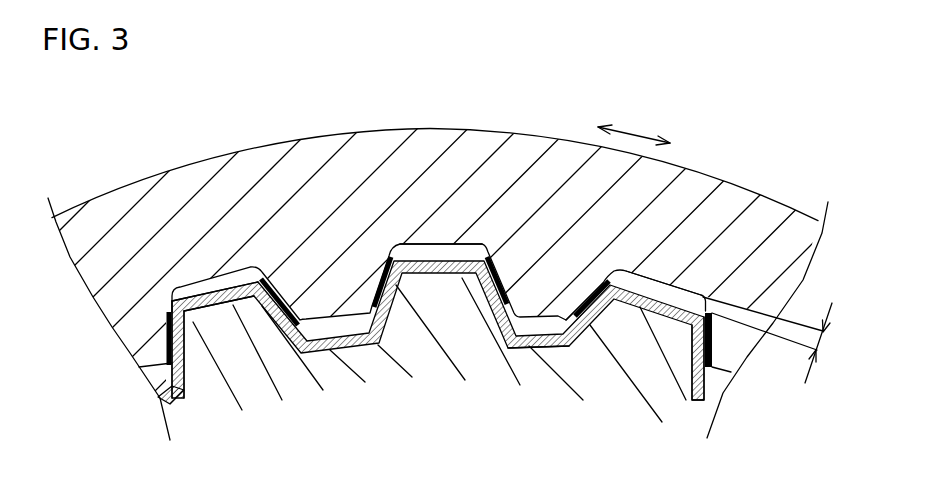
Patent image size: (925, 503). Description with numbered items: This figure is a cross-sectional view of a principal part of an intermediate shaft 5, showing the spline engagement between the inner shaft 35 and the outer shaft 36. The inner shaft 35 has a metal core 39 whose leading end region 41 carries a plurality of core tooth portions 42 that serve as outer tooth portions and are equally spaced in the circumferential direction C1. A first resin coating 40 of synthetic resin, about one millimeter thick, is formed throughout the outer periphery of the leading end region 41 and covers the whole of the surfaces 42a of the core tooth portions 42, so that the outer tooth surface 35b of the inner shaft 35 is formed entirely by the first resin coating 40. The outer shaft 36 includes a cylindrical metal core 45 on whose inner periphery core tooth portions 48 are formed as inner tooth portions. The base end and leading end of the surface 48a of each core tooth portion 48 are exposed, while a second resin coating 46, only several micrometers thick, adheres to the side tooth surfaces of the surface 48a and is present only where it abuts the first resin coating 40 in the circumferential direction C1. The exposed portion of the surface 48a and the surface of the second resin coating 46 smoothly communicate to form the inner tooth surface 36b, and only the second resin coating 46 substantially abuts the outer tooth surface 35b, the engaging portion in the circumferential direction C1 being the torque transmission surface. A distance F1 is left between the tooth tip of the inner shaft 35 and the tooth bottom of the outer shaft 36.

The rotor core 5 is at (808, 168).
The inner shaft 35 is at (689, 408).
The outer tooth surface 35b is at (672, 312).
The outer shaft 36 is at (423, 126).
The inner tooth surface 36b is at (648, 298).
The core 39 is at (237, 323).
The first resin coating 40 is at (207, 292).
The leading end region 41 is at (697, 491).
The core tooth portions 42 is at (172, 296).
The surfaces of the core tooth portions 42a is at (557, 348).
The core 45 is at (453, 157).
The second resin coating 46 is at (508, 270).
The core tooth portions 48 is at (543, 323).
The surface of the core tooth portion 48a is at (482, 252).
The circumferential direction C1 is at (637, 130).
The distance F1 is at (775, 349).